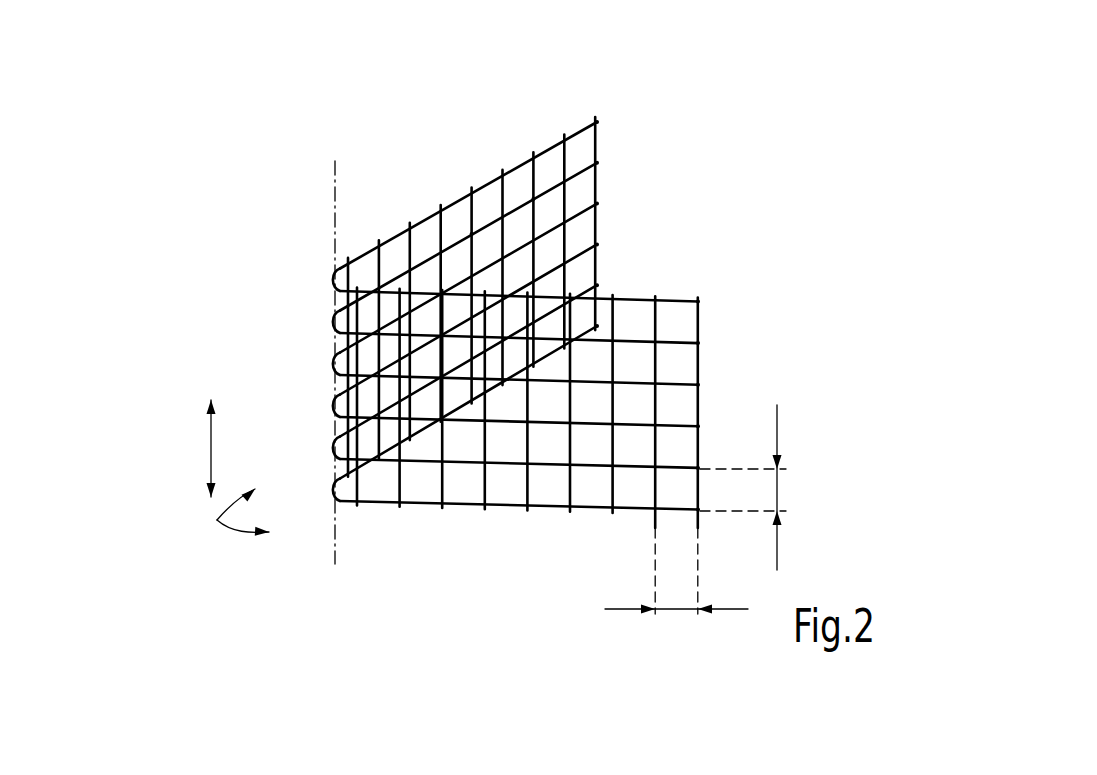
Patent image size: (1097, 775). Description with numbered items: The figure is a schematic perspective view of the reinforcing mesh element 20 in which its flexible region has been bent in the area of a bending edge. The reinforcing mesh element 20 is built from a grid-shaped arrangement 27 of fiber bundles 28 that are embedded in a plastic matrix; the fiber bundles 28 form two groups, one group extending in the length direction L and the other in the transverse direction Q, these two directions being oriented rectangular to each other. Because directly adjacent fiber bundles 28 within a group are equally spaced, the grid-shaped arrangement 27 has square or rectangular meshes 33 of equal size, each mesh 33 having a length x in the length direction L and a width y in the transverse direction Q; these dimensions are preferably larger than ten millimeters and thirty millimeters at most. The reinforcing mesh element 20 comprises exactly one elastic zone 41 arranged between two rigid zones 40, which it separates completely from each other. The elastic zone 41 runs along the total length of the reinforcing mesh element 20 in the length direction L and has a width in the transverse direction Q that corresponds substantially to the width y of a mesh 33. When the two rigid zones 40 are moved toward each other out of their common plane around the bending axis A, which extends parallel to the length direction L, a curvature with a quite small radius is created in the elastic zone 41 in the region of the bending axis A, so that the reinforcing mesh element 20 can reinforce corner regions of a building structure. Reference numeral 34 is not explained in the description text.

The reinforcing mesh element 20 is at (747, 162).
The grid-shaped arrangement 27 is at (419, 203).
The fiber bundles 28 is at (580, 170).
The meshes 33 is at (634, 323).
The wire intersection points 34 is at (472, 234).
The rigid zones 40 is at (550, 127).
The elastic zone 41 is at (357, 532).
The bending axis A is at (336, 211).
The length direction L is at (209, 452).
The transverse direction Q is at (217, 520).
The length of a mesh x is at (777, 488).
The width of a mesh y is at (668, 610).